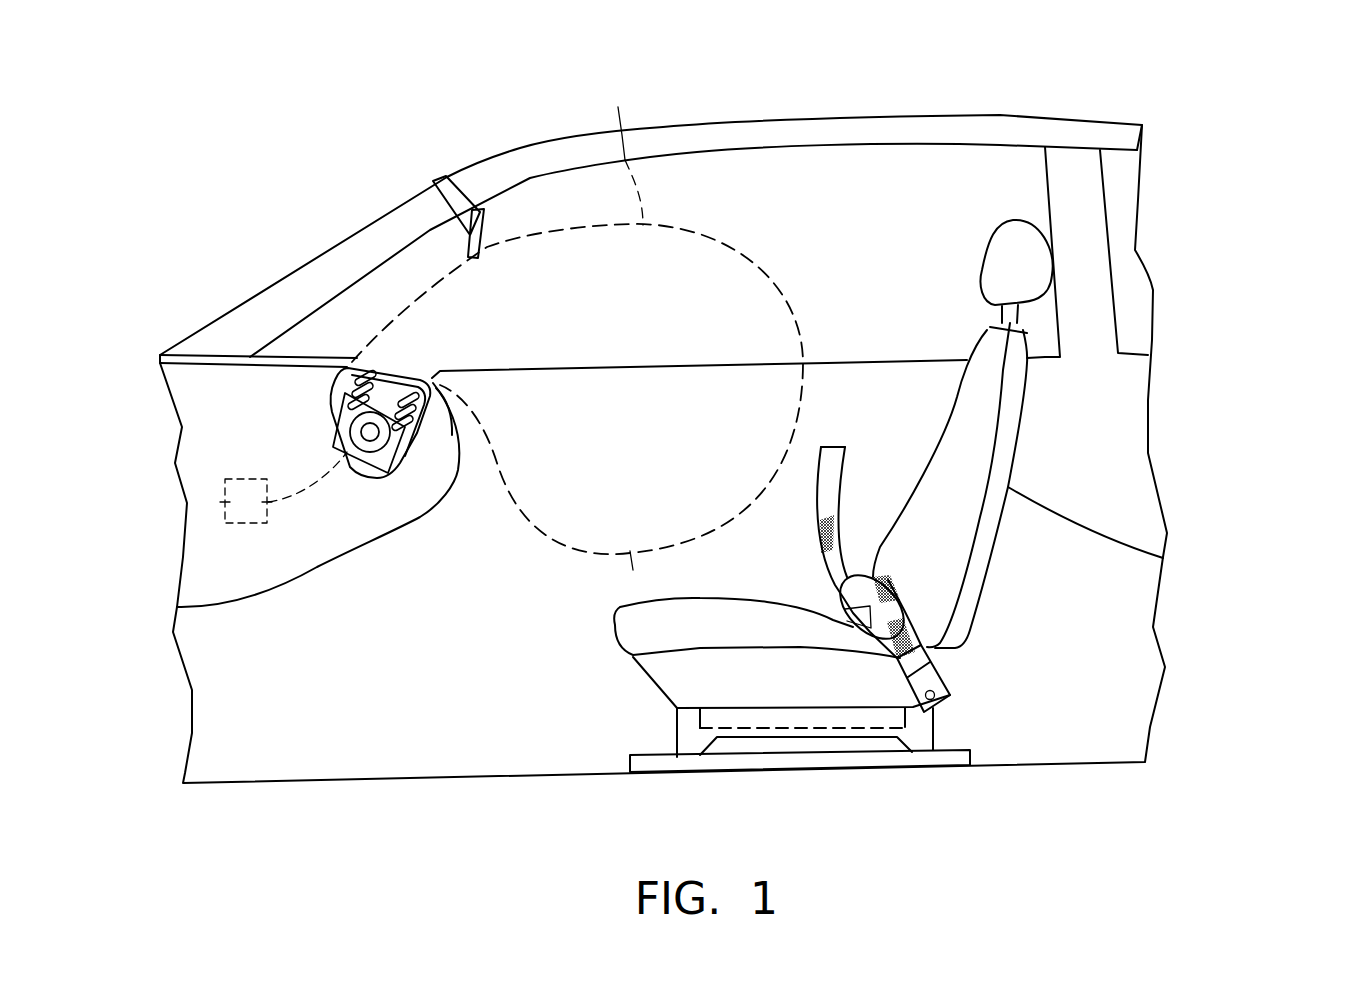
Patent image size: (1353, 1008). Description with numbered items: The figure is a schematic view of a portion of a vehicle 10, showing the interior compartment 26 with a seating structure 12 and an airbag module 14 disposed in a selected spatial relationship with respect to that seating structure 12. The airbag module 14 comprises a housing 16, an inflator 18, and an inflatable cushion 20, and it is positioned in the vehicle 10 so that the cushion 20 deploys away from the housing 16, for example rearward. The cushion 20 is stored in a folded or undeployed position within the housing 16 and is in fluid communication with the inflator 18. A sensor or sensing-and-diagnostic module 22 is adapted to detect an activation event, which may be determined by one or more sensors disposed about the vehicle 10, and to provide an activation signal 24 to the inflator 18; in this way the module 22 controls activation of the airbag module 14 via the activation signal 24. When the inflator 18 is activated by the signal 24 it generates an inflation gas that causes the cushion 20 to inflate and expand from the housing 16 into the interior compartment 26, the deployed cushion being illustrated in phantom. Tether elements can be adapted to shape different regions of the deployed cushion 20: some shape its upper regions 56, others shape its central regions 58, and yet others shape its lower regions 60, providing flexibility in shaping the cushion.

The vehicle 10 is at (1210, 147).
The seating structure 12 is at (1165, 557).
The airbag module 14 is at (421, 436).
The housing 16 is at (327, 410).
The inflator 18 is at (390, 474).
The inflatable cushion 20 is at (340, 368).
The sensing-and-diagnostic module 22 is at (224, 502).
The activation signal 24 is at (310, 490).
The interior compartment 26 is at (863, 232).
The upper regions 56 is at (622, 151).
The central regions 58 is at (797, 407).
The lower regions 60 is at (633, 553).